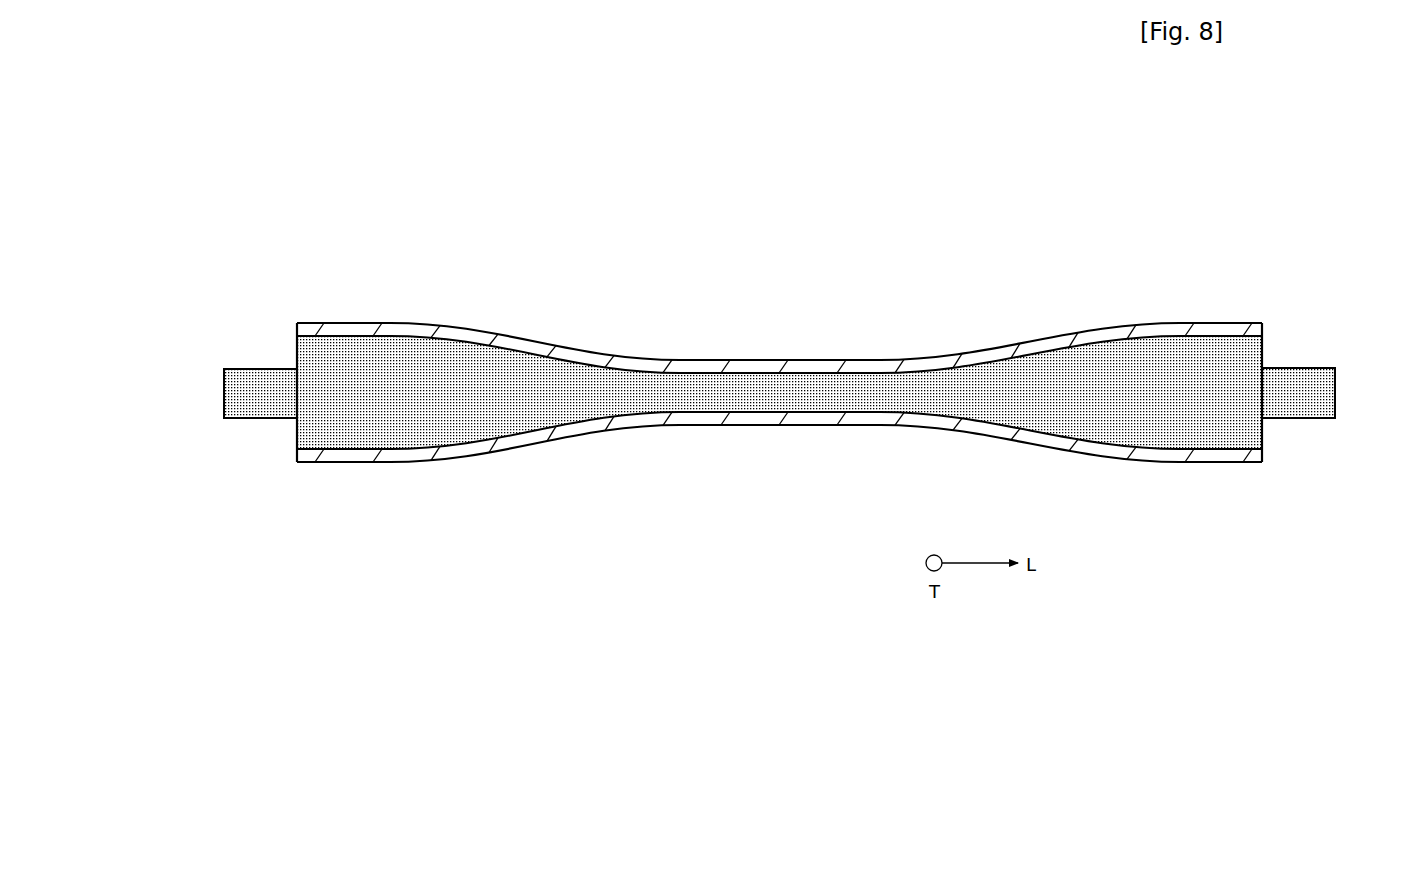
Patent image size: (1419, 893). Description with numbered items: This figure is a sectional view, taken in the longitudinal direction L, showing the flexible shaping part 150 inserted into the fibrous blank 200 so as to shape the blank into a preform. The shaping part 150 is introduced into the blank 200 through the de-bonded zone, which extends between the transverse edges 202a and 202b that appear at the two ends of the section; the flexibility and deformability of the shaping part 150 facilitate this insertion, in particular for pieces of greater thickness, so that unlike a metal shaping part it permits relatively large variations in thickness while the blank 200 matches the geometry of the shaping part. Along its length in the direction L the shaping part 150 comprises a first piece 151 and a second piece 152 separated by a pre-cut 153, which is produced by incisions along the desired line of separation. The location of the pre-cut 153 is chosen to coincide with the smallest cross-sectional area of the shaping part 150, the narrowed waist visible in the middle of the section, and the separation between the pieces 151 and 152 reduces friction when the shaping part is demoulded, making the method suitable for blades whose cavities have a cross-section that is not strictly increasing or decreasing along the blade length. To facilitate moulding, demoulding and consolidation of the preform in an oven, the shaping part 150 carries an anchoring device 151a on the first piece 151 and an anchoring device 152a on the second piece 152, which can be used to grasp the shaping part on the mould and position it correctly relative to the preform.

The fibrous blank 200 is at (1115, 320).
The flexible shaping part 150 is at (693, 400).
The first piece 151 is at (365, 357).
The anchoring device 151a is at (260, 393).
The second piece 152 is at (1240, 356).
The anchoring device 152a is at (1300, 394).
The pre-cut 153 is at (780, 393).
The transverse edge 202a is at (297, 456).
The transverse edge 202b is at (1264, 454).